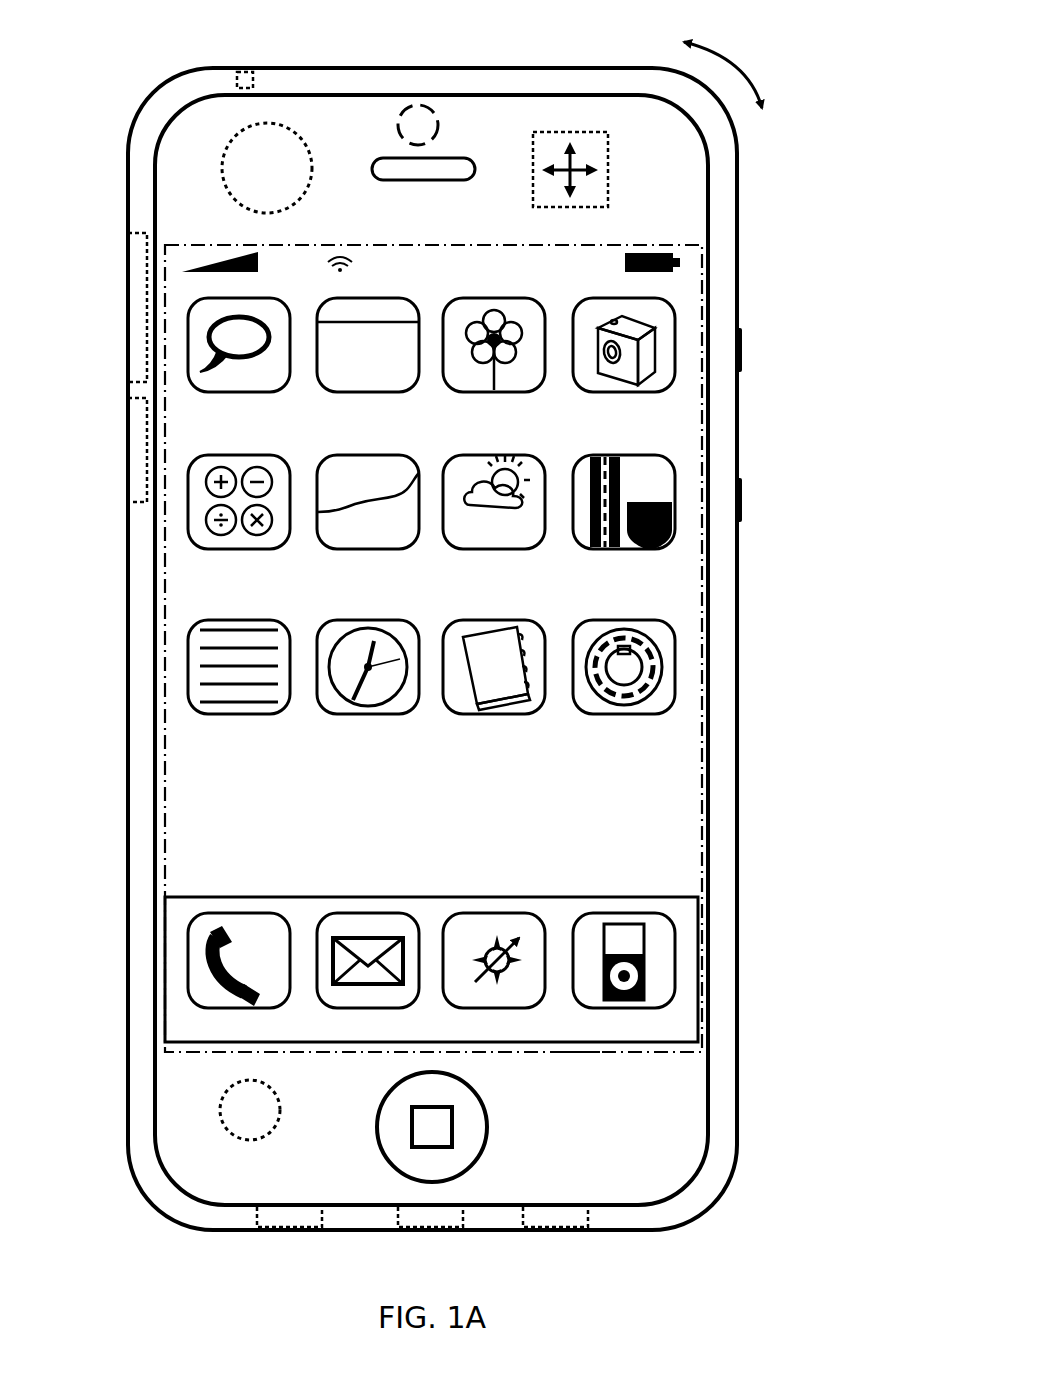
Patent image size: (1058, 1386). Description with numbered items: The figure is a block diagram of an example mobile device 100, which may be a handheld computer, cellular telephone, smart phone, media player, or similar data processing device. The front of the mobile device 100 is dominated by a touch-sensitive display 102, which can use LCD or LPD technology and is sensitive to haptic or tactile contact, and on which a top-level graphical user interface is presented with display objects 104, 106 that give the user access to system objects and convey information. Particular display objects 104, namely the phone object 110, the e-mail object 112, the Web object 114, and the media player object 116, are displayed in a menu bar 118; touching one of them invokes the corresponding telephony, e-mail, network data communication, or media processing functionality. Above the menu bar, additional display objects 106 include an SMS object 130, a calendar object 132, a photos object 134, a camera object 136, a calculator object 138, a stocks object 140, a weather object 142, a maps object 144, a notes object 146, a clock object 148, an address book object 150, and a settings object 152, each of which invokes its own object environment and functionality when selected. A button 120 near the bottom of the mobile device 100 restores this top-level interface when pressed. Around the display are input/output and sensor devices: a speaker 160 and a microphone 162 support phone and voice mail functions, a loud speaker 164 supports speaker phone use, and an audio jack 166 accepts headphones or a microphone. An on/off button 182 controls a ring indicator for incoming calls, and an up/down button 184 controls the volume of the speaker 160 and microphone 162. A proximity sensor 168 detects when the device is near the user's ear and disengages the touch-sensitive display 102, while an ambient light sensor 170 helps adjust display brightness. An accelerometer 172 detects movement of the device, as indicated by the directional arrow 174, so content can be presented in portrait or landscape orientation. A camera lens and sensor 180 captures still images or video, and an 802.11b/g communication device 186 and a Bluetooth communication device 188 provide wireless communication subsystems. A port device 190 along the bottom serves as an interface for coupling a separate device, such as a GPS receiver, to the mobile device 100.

The mobile device 100 is at (513, 68).
The touch-sensitive display 102 is at (638, 245).
The display objects 104 is at (685, 912).
The additional display objects 106 is at (682, 295).
The phone object 110 is at (240, 913).
The e-mail object 112 is at (370, 913).
The Web object 114 is at (497, 913).
The media player object 116 is at (627, 913).
The menu bar 118 is at (580, 1052).
The button 120 is at (487, 1125).
The SMS object 130 is at (283, 392).
The calendar object 132 is at (413, 392).
The photos object 134 is at (538, 392).
The camera object 136 is at (668, 392).
The calculator object 138 is at (285, 549).
The stocks object 140 is at (413, 549).
The weather object 142 is at (540, 549).
The maps object 144 is at (670, 549).
The notes object 146 is at (283, 714).
The clock object 148 is at (413, 714).
The address book object 150 is at (540, 714).
The settings object 152 is at (670, 714).
The speaker 160 is at (400, 180).
The microphone 162 is at (322, 1217).
The loud speaker 164 is at (588, 1217).
The audio jack 166 is at (253, 78).
The proximity sensor 168 is at (222, 168).
The ambient light sensor 170 is at (272, 1131).
The accelerometer 172 is at (608, 170).
The directional arrow 174 is at (745, 70).
The camera lens and sensor 180 is at (440, 125).
The on/off button 182 is at (742, 348).
The up/down button 184 is at (742, 498).
The 802.11b/g communication device 186 is at (130, 235).
The Bluetooth communication device 188 is at (130, 398).
The port device 190 is at (463, 1217).